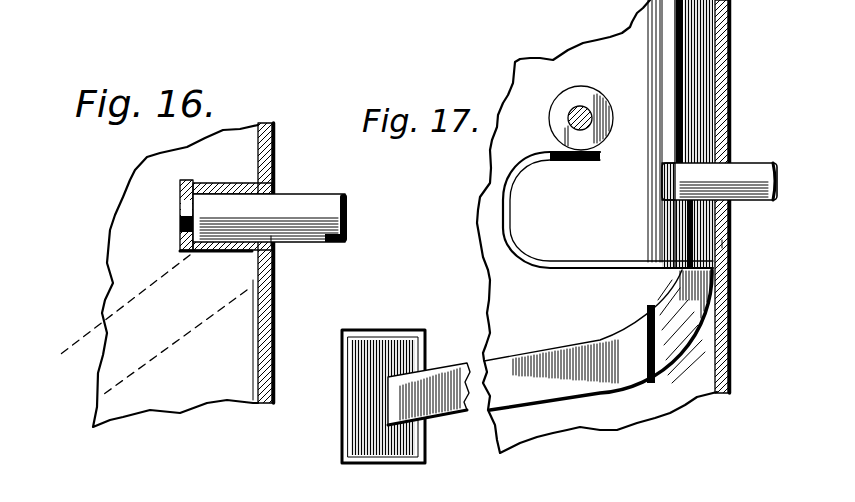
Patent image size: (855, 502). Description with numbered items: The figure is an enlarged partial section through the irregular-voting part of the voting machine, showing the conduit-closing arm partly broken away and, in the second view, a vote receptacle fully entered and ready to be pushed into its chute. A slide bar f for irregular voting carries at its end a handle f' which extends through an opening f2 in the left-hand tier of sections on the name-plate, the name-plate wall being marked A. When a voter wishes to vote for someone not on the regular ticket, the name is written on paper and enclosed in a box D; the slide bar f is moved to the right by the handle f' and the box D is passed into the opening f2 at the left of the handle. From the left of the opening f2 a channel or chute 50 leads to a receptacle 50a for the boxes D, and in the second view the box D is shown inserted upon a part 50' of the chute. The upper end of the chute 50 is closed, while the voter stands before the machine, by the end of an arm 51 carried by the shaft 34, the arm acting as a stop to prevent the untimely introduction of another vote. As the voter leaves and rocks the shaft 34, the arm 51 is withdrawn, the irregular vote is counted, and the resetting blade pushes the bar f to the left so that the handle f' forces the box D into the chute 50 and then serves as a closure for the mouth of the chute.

In FIG. 16, the wall or plate A is at (280, 263).
In FIG. 17, the wall or plate A is at (733, 196).
In FIG. 16, the irregular slide bar f is at (207, 220).
In FIG. 17, the irregular slide bar f is at (645, 179).
In FIG. 16, the handle f' is at (270, 233).
In FIG. 17, the handle f' is at (719, 171).
In FIG. 16, the opening f2 is at (277, 243).
In FIG. 17, the opening f2 is at (723, 243).
In FIG. 16, the chute 50 is at (138, 318).
In FIG. 17, the chute 50 is at (598, 340).
In FIG. 16, the part of the chute 50' is at (173, 325).
In FIG. 17, the part of the chute 50' is at (635, 131).
In FIG. 17, the receptacle 50a is at (388, 394).
In FIG. 17, the arm 51 is at (608, 210).
In FIG. 17, the shaft 34 is at (590, 123).
In FIG. 17, the box D is at (703, 223).